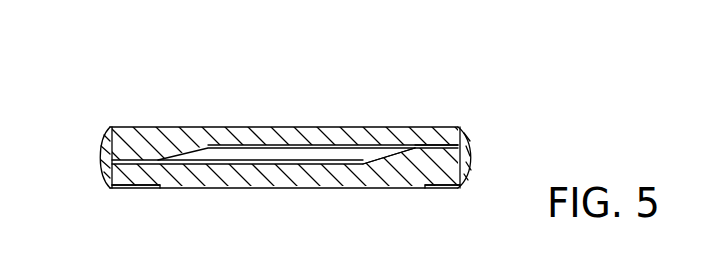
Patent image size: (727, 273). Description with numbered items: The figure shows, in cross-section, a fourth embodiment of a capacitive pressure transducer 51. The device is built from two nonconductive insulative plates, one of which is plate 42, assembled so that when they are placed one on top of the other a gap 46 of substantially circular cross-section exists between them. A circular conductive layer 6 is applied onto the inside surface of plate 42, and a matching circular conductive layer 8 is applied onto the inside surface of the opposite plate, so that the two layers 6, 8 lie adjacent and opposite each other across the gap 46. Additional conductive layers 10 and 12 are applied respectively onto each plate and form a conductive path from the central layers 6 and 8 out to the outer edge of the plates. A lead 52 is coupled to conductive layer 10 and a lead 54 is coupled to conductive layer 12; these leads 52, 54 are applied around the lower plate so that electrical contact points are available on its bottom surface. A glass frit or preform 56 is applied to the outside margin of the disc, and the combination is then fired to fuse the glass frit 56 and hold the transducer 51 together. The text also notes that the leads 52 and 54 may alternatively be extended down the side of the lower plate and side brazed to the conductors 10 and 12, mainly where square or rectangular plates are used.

The capacitive pressure transducer 51 is at (170, 98).
The plate 42 is at (338, 126).
The conductive layer 6 is at (292, 133).
The gap 46 is at (236, 150).
The conductive layer 12 is at (223, 182).
The conductive layer 8 is at (348, 172).
The conductive layer 10 is at (438, 140).
The glass frit or preform 56 is at (100, 158).
The lead 54 is at (143, 190).
The lead 52 is at (450, 188).